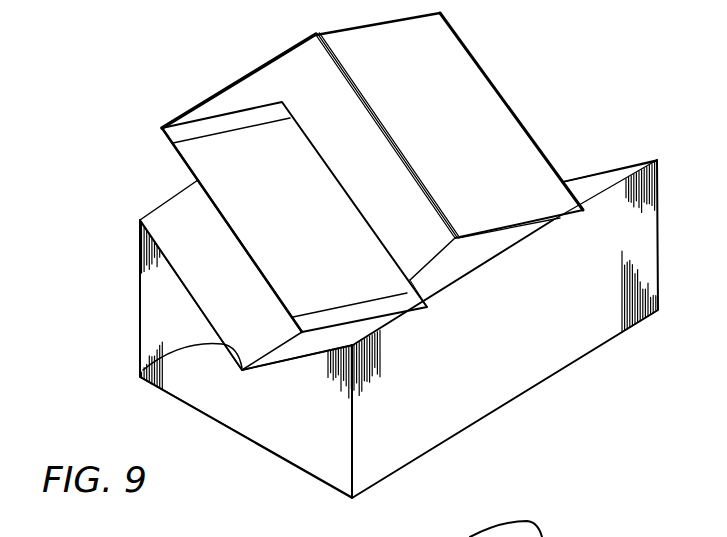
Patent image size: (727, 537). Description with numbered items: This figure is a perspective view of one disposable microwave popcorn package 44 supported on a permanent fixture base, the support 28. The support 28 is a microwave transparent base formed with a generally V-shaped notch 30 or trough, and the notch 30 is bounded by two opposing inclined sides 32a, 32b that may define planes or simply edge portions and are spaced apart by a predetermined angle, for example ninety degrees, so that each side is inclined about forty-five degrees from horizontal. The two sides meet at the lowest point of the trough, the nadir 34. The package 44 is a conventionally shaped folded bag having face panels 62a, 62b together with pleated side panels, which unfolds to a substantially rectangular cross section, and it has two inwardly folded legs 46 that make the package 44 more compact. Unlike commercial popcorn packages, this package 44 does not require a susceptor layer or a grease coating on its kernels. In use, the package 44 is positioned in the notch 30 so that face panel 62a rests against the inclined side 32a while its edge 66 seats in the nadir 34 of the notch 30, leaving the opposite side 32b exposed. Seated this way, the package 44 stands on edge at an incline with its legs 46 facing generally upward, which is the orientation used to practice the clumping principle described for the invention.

The support 28 is at (517, 370).
The V-shaped notch 30 is at (215, 302).
The side of notch 32a is at (167, 245).
The side of notch 32b is at (602, 175).
The nadir 34 is at (138, 377).
The disposable microwave popcorn package 44 is at (498, 92).
The inwardly folded legs 46 is at (247, 107).
The face panel 62a is at (186, 176).
The face panel 62b is at (293, 80).
The edge 66 is at (427, 270).